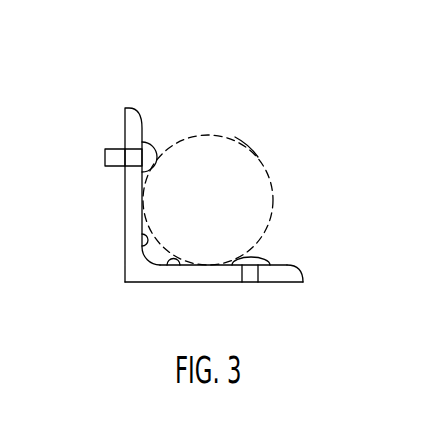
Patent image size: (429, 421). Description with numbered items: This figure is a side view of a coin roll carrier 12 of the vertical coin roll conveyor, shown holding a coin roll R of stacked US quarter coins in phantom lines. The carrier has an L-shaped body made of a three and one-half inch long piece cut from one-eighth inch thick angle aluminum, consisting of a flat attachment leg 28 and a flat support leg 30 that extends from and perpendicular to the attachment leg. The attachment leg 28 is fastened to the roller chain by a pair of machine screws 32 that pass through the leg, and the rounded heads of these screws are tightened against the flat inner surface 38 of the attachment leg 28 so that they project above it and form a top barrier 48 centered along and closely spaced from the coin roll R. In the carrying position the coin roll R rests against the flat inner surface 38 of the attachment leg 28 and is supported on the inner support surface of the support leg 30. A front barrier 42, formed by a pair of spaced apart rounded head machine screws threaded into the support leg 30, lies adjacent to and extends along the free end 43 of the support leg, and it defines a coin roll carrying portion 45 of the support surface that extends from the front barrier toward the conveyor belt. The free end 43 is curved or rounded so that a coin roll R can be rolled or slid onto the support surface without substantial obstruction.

The coin roll carrier 12 is at (93, 85).
The attachment leg 28 is at (143, 127).
The support leg 30 is at (272, 263).
The machine screws 32 is at (118, 148).
The flat inner surface 38 is at (142, 246).
The front barrier 42 is at (270, 245).
The free end 43 is at (303, 273).
The coin roll carrying portion 45 is at (178, 264).
The top barrier 48 is at (163, 127).
The coin roll R is at (250, 146).